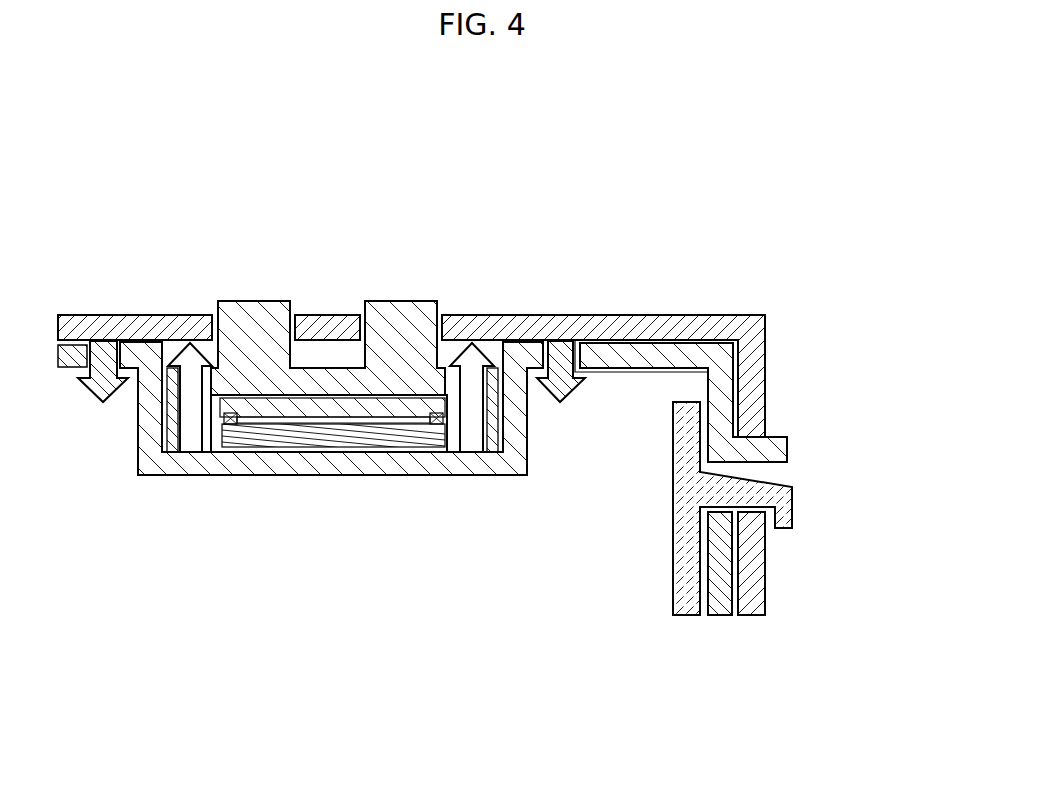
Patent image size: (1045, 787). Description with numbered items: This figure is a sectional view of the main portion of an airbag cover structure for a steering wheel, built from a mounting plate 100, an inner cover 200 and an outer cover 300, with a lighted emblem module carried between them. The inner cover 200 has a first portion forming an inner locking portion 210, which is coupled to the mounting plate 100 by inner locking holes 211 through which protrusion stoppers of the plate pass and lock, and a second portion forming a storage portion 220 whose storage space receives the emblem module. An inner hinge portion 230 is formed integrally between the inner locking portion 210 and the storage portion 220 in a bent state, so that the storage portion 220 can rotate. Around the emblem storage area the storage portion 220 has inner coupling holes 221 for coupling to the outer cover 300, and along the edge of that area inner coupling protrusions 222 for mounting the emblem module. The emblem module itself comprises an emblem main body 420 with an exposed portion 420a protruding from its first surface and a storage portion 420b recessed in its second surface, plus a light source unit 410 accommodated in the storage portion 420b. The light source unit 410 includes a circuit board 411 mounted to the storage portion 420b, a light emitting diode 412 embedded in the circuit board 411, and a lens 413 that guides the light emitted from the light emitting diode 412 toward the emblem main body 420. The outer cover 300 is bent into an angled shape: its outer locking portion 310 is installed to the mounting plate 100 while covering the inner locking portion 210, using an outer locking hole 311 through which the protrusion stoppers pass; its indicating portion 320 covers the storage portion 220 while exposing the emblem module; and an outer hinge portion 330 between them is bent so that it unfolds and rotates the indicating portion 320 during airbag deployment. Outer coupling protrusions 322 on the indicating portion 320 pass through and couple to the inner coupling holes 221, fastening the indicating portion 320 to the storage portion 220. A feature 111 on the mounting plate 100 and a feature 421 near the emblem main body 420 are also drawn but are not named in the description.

The mounting plate 100 is at (786, 551).
The hook portion of panel 111 is at (770, 497).
The inner cover 200 is at (691, 487).
The inner locking portion 210 is at (720, 432).
The inner locking holes 211 is at (718, 512).
The storage portion 220 is at (605, 362).
The inner coupling holes 221 is at (130, 362).
The inner coupling protrusions 222 is at (193, 348).
The inner hinge portion 230 is at (715, 358).
The outer cover 300 is at (598, 329).
The outer locking portion 310 is at (758, 387).
The outer locking hole 311 is at (770, 437).
The indicating portion 320 is at (703, 322).
The outer coupling protrusions 322 is at (103, 402).
The outer hinge portion 330 is at (748, 328).
The light source unit 410 is at (329, 501).
The circuit board 411 is at (333, 483).
The light emitting diode 412 is at (372, 410).
The lens 413 is at (228, 423).
The emblem main body 420 is at (331, 360).
The exposed portion 420a is at (405, 312).
The storage portion 420b is at (453, 403).
The housing insert strip 421 is at (180, 440).